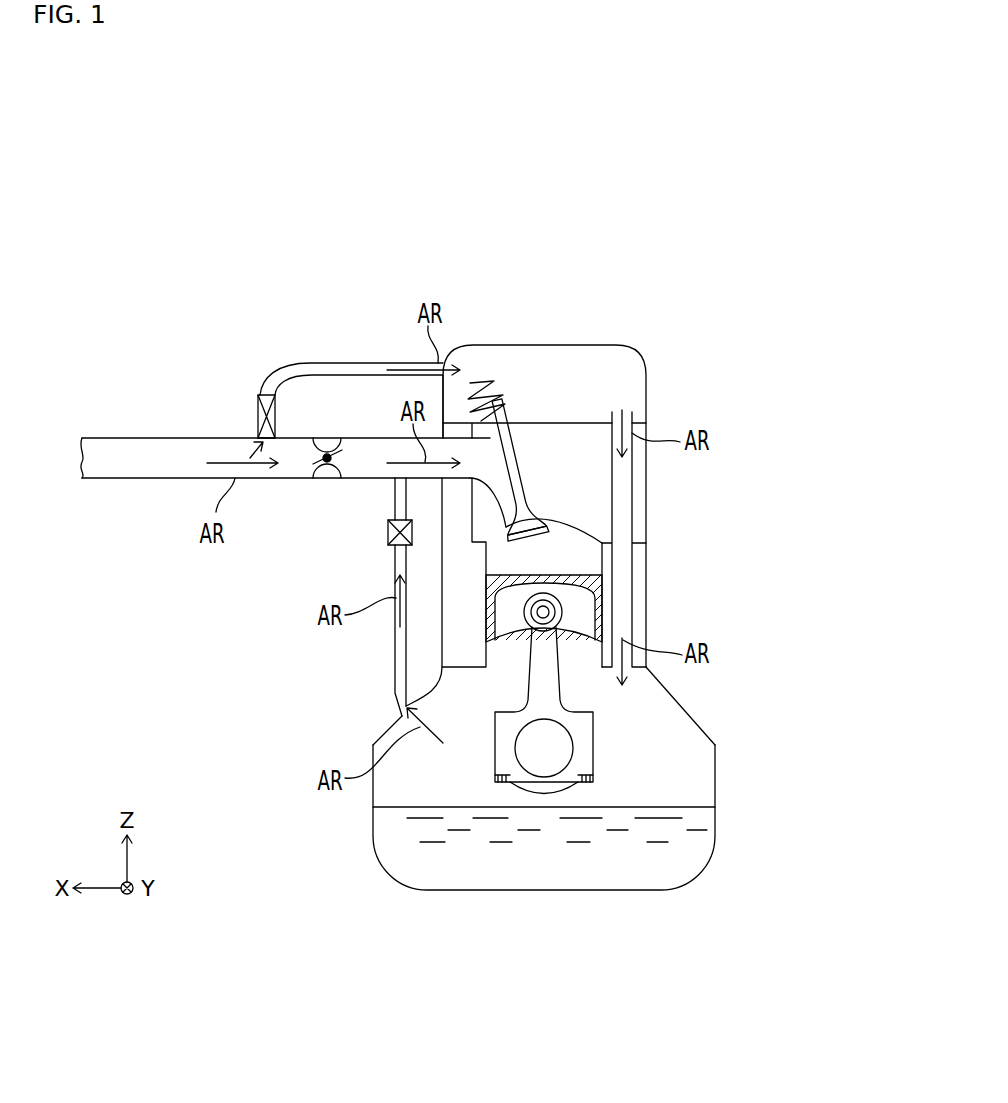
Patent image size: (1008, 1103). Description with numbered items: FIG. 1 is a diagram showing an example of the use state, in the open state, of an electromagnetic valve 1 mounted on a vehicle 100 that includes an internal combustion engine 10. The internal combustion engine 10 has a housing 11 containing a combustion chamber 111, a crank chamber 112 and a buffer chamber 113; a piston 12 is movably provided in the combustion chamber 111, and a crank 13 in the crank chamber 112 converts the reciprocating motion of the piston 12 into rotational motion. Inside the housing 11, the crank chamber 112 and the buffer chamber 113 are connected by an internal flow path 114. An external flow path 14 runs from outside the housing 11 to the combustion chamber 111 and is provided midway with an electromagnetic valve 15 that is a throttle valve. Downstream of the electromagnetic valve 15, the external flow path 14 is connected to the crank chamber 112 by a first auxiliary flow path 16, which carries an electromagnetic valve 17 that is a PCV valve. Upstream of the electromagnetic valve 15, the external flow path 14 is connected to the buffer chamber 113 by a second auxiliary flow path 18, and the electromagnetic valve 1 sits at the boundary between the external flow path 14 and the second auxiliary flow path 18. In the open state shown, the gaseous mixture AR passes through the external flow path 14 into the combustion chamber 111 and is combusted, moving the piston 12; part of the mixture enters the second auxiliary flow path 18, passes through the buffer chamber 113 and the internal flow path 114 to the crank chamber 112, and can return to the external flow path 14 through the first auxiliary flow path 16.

The vehicle 100 is at (807, 308).
The internal combustion engine 10 is at (742, 397).
The housing 11 is at (677, 698).
The combustion chamber 111 is at (578, 553).
The crank chamber 112 is at (678, 780).
The buffer chamber 113 is at (610, 373).
The internal flow path 114 is at (632, 477).
The piston 12 is at (611, 612).
The crank 13 is at (606, 735).
The external flow path 14 is at (146, 438).
The electromagnetic valve 15 is at (327, 478).
The first auxiliary flow path 16 is at (393, 650).
The electromagnetic valve 17 is at (388, 541).
The second auxiliary flow path 18 is at (370, 363).
The electromagnetic valve 1 is at (257, 384).